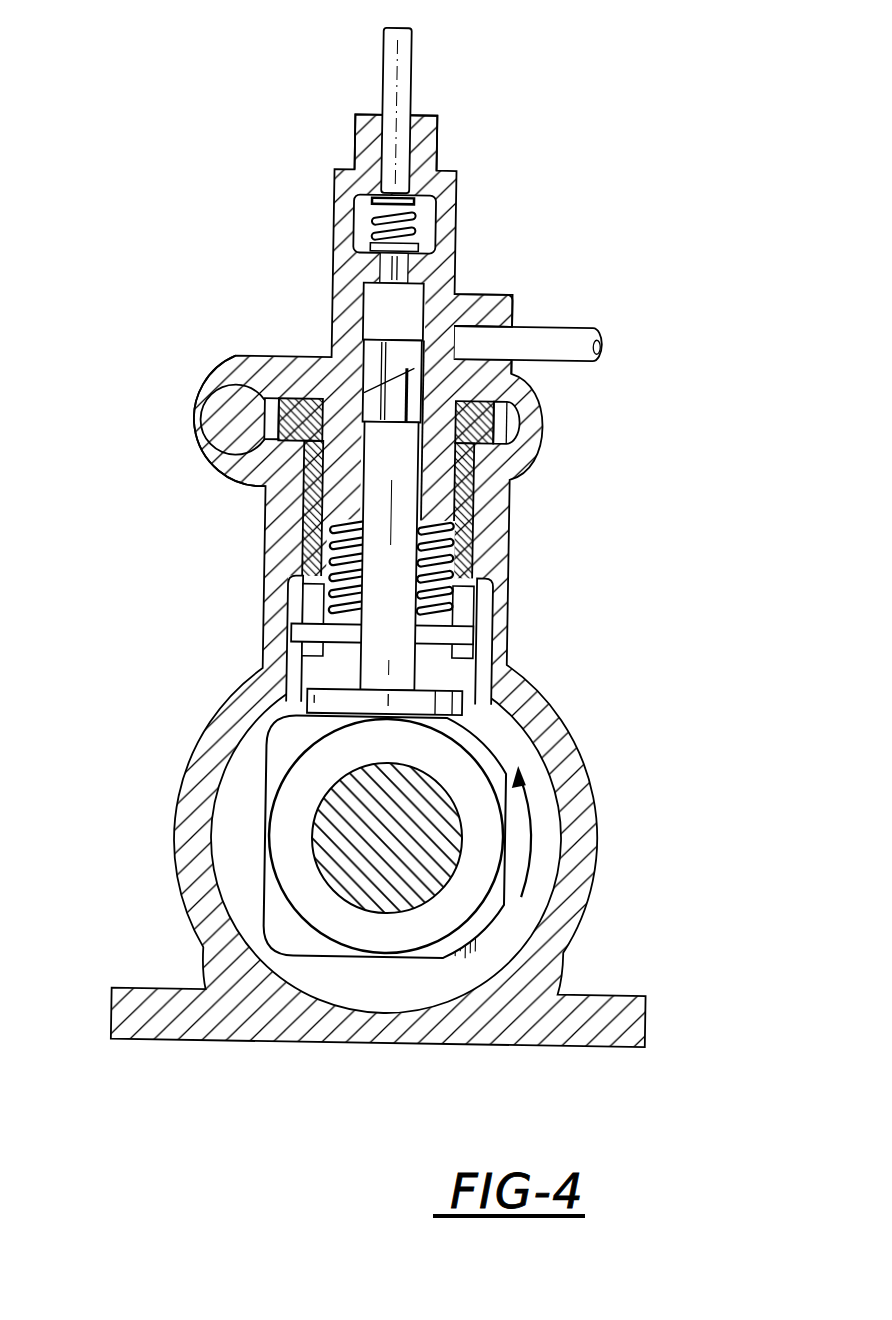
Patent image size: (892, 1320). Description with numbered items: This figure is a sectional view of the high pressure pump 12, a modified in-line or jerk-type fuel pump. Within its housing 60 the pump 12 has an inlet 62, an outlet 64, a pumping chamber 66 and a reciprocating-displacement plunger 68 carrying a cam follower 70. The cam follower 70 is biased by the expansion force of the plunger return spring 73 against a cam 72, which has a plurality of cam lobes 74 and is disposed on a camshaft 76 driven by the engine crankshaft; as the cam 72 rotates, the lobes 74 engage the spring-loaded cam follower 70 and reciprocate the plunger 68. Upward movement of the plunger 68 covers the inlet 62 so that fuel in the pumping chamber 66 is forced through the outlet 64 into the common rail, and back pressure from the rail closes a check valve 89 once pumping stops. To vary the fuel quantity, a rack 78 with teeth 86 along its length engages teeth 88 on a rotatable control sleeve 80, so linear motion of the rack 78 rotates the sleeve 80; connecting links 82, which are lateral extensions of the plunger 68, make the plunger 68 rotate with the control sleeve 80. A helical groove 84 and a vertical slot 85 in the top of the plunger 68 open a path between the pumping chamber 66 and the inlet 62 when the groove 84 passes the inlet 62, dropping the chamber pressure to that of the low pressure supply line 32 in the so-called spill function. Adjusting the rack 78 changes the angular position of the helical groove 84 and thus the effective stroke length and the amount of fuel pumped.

The pump 12 is at (284, 160).
The low pressure supply line 32 is at (580, 326).
The housing 60 is at (441, 145).
The inlet 62 is at (453, 337).
The outlet 64 is at (413, 28).
The pumping chamber 66 is at (380, 302).
The reciprocating-displacement plunger 68 is at (420, 476).
The cam follower 70 is at (305, 702).
The cam 72 is at (283, 820).
The plunger return spring 73 is at (442, 585).
The cam lobes 74 is at (282, 746).
The camshaft 76 is at (327, 840).
The rack 78 is at (196, 410).
The rotatable control sleeve 80 is at (305, 520).
The connecting links 82 is at (292, 633).
The helical groove 84 is at (513, 373).
The vertical slot 85 is at (362, 357).
The teeth 86 is at (242, 396).
The teeth 88 is at (252, 423).
The check valve 89 is at (362, 232).